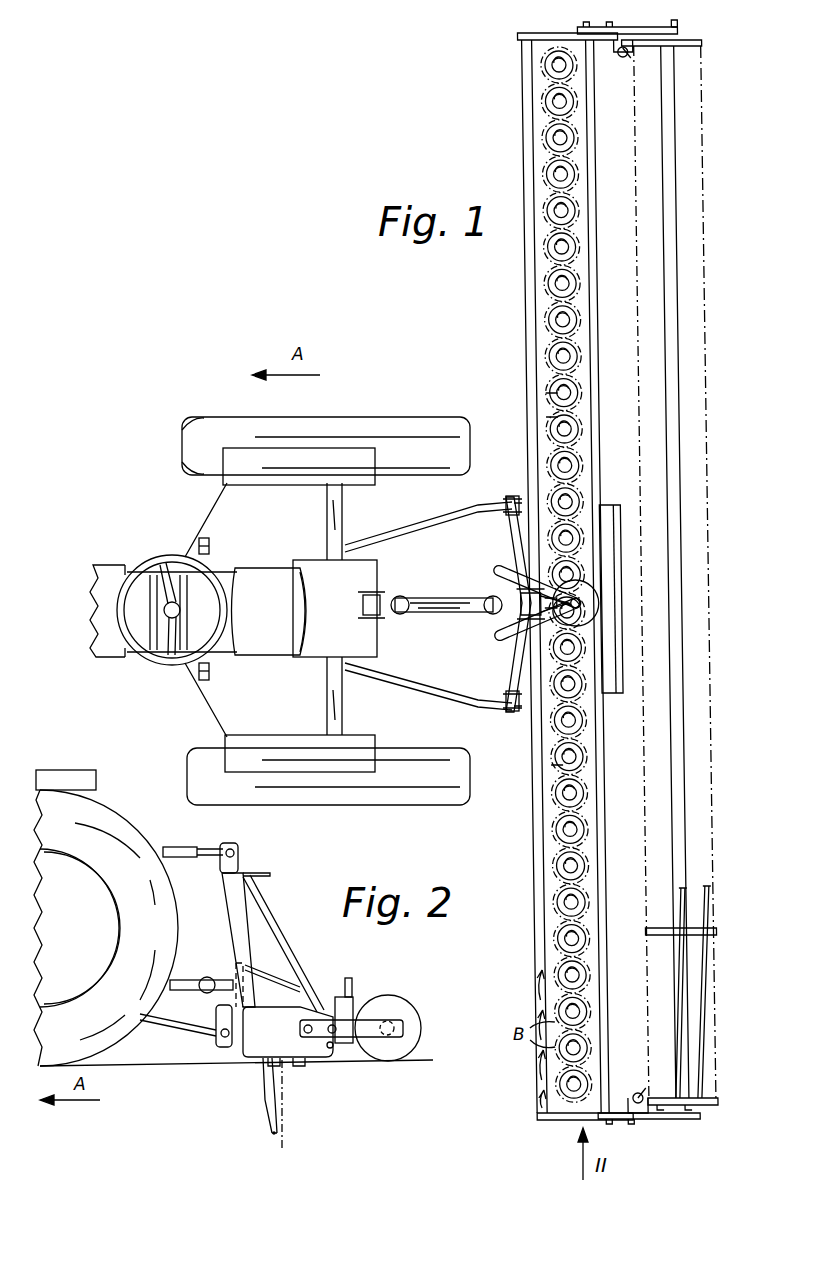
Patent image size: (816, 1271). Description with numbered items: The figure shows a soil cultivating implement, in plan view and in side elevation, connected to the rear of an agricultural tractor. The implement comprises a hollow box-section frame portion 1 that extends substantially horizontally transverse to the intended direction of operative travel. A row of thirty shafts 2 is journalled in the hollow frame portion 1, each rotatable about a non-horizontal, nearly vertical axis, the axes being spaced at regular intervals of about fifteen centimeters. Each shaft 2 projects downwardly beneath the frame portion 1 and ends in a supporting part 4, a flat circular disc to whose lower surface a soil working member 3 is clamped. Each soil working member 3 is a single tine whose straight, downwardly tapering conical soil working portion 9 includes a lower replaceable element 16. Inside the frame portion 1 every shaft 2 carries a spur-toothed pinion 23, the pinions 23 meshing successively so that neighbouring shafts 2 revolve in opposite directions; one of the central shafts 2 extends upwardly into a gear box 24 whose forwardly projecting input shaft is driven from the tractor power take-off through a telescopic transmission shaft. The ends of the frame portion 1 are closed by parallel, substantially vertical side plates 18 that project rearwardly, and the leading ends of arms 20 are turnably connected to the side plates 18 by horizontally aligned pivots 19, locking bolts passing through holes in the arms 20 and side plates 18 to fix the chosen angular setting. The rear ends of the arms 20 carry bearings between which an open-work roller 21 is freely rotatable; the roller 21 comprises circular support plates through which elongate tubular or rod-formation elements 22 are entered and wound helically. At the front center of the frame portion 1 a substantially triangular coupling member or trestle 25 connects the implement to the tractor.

In FIG. 1, the hollow box-section frame portion 1 is at (521, 340).
In FIG. 1, the shafts 2 is at (540, 278).
In FIG. 2, the soil working member 3 is at (262, 1112).
In FIG. 2, the supporting part 4 is at (300, 1066).
In FIG. 2, the soil working portion 9 is at (284, 1140).
In FIG. 2, the replaceable element 16 is at (272, 1131).
In FIG. 1, the side plates 18 is at (518, 36).
In FIG. 2, the side plates 18 is at (255, 1052).
In FIG. 1, the pivots 19 is at (583, 22).
In FIG. 2, the pivots 19 is at (305, 1033).
In FIG. 1, the arms 20 is at (674, 20).
In FIG. 2, the arms 20 is at (372, 1020).
In FIG. 1, the open-work roller 21 is at (700, 492).
In FIG. 2, the open-work roller 21 is at (418, 1008).
In FIG. 1, the elongate tubular or rod-formation elements 22 is at (696, 900).
In FIG. 1, the pinions 23 is at (540, 417).
In FIG. 1, the gear box 24 is at (580, 605).
In FIG. 2, the gear box 24 is at (268, 986).
In FIG. 1, the coupling member or trestle 25 is at (515, 560).
In FIG. 2, the coupling member or trestle 25 is at (234, 925).